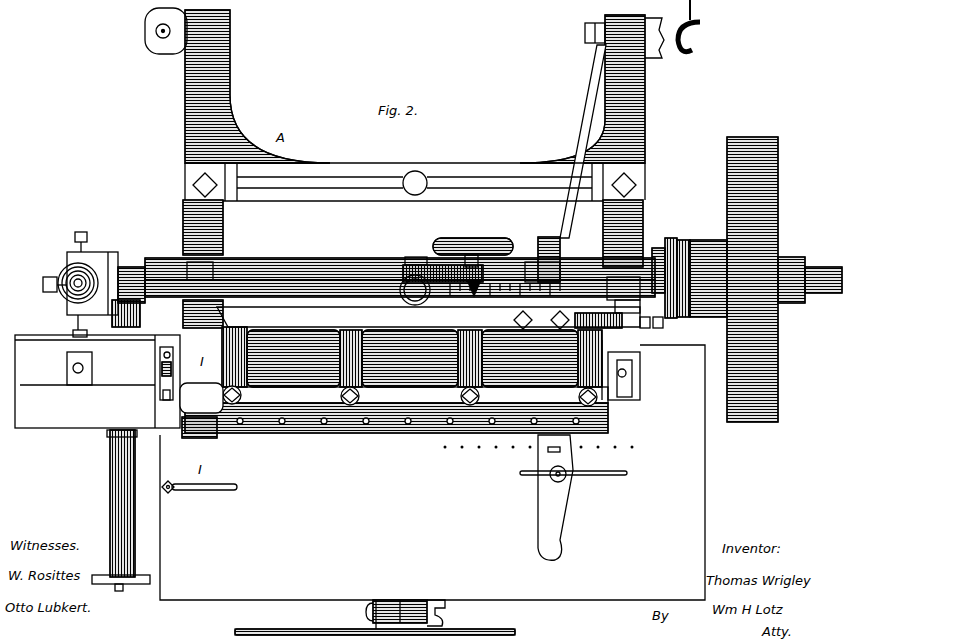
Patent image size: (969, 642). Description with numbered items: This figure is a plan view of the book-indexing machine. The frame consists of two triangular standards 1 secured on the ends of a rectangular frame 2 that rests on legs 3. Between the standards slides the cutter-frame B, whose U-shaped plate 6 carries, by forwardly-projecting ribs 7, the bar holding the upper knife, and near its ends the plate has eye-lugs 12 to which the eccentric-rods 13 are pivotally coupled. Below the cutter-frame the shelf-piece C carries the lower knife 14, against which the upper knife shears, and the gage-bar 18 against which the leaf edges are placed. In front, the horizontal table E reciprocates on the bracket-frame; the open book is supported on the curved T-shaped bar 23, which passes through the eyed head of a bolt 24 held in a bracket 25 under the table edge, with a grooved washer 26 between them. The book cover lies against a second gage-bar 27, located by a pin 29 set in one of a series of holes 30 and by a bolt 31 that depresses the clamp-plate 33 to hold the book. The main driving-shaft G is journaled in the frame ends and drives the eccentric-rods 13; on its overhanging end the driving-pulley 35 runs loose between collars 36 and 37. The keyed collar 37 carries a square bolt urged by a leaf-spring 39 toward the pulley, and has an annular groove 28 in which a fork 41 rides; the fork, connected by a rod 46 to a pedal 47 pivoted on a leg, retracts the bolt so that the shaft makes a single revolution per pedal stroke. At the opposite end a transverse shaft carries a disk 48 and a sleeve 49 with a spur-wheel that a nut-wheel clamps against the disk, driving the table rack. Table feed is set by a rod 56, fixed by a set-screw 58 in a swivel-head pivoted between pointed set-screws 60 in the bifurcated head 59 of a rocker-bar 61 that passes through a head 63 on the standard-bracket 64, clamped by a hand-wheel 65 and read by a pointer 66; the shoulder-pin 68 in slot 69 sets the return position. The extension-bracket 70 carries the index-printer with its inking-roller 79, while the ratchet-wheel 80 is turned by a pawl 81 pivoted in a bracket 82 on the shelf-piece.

The standards 1 is at (170, 246).
The rectangular frame 2 is at (466, 170).
The legs 3 is at (227, 128).
The U-shaped plate 6 is at (428, 303).
The ribs 7 is at (246, 328).
The eye-lugs 12 is at (532, 252).
The eccentric-rods 13 is at (548, 240).
The lower knife 14 is at (418, 432).
The gage-bar 18 is at (622, 400).
The T-shaped bar 23 is at (476, 637).
The bolt 24 is at (445, 600).
The bracket 25 is at (415, 600).
The washer 26 is at (388, 601).
The gage-bar 27 is at (562, 535).
The annular groove 28 is at (698, 245).
The pin 29 is at (600, 435).
The holes 30 is at (475, 455).
The bolt 31 is at (568, 480).
The clamp-plate 33 is at (548, 484).
The driving-pulley 35 is at (773, 225).
The collar 36 is at (790, 303).
The collar 37 is at (673, 292).
The leaf-spring 39 is at (670, 240).
The fork 41 is at (712, 242).
The rod 46 is at (691, 26).
The pedal 47 is at (580, 130).
The disk 48 is at (122, 385).
The sleeve 49 is at (118, 462).
The rod 56 is at (66, 278).
The set-screw 58 is at (45, 290).
The bifurcated head 59 is at (108, 262).
The pointed set-screws 60 is at (84, 232).
The rocker-bar 61 is at (325, 283).
The head 63 is at (414, 300).
The standard-bracket 64 is at (418, 263).
The hand-wheel 65 is at (462, 240).
The pointer 66 is at (467, 290).
The shoulder-pin 68 is at (168, 494).
The slot 69 is at (228, 492).
The extension-bracket 70 is at (212, 418).
The inking-roller 79 is at (203, 436).
The ratchet-wheel 80 is at (163, 398).
The pawl 81 is at (172, 372).
The bracket 82 is at (162, 353).
The cutter-frame B is at (412, 358).
The shelf-piece C is at (97, 381).
The table E is at (432, 472).
The main driving-shaft G is at (830, 272).